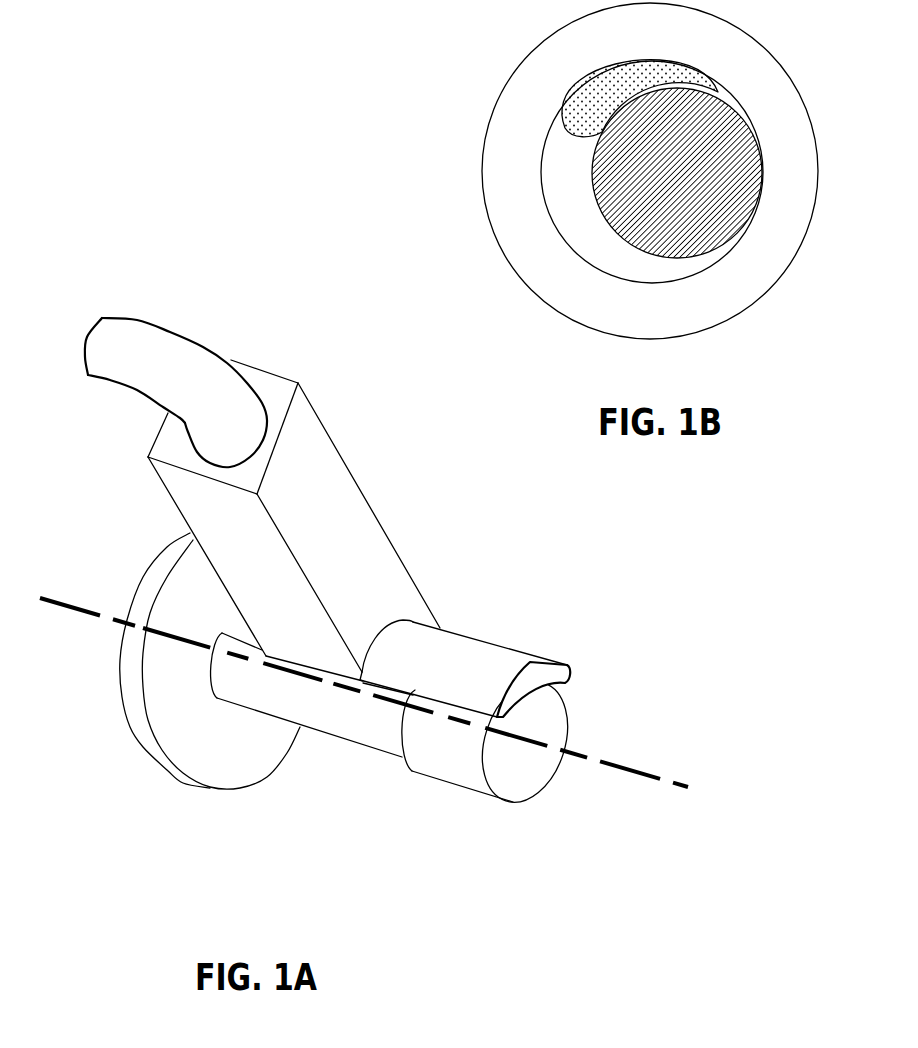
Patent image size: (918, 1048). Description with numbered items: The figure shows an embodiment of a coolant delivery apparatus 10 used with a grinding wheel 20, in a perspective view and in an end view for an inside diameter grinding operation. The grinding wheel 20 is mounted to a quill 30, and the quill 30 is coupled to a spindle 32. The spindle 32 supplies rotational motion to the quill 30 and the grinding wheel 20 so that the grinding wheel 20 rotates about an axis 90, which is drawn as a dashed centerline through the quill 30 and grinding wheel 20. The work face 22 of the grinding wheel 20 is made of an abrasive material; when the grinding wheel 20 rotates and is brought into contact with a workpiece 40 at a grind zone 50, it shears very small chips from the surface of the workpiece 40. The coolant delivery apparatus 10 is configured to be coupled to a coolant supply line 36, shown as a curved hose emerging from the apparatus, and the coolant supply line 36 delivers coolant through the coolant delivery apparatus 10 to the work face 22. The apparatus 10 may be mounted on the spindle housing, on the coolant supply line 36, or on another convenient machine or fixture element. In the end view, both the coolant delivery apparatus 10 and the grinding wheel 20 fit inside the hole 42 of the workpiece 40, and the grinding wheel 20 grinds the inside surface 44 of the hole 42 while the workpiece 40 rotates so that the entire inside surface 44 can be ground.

In FIG. 1A, the coolant delivery apparatus 10 is at (418, 469).
In FIG. 1B, the coolant delivery apparatus 10 is at (626, 93).
In FIG. 1A, the grinding wheel 20 is at (402, 829).
In FIG. 1B, the grinding wheel 20 is at (688, 178).
In FIG. 1A, the work face 22 is at (446, 747).
In FIG. 1A, the quill 30 is at (334, 738).
In FIG. 1A, the spindle 32 is at (185, 787).
In FIG. 1A, the coolant supply line 36 is at (168, 328).
In FIG. 1B, the workpiece 40 is at (767, 293).
In FIG. 1B, the hole 42 is at (576, 276).
In FIG. 1B, the inside surface 44 is at (652, 283).
In FIG. 1B, the grind zone 50 is at (763, 167).
In FIG. 1A, the axis 90 is at (384, 701).